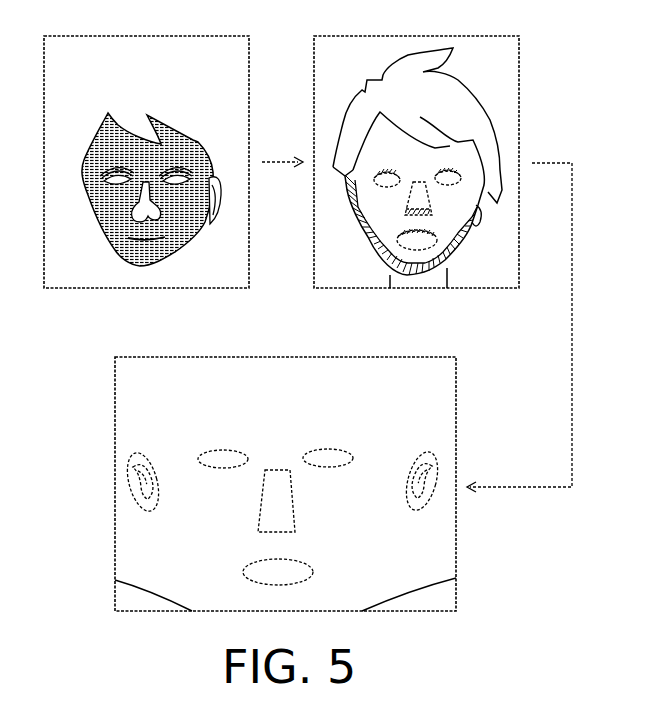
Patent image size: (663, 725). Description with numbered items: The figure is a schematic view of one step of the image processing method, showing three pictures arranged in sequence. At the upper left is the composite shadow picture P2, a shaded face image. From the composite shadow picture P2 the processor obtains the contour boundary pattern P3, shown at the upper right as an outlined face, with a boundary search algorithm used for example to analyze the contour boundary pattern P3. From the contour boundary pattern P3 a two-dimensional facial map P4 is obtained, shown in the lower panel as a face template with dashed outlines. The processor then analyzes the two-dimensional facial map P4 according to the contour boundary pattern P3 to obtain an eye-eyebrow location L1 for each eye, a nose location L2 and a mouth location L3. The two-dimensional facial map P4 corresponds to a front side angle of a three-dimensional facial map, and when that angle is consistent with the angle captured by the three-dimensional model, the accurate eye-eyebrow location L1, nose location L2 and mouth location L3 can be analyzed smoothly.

The composite shadow picture P2 is at (76, 66).
The contour boundary pattern P3 is at (347, 66).
The 2D facial map P4 is at (148, 387).
The eye-eyebrow location L1 is at (226, 450).
The nose location L2 is at (291, 493).
The mouth location L3 is at (300, 559).